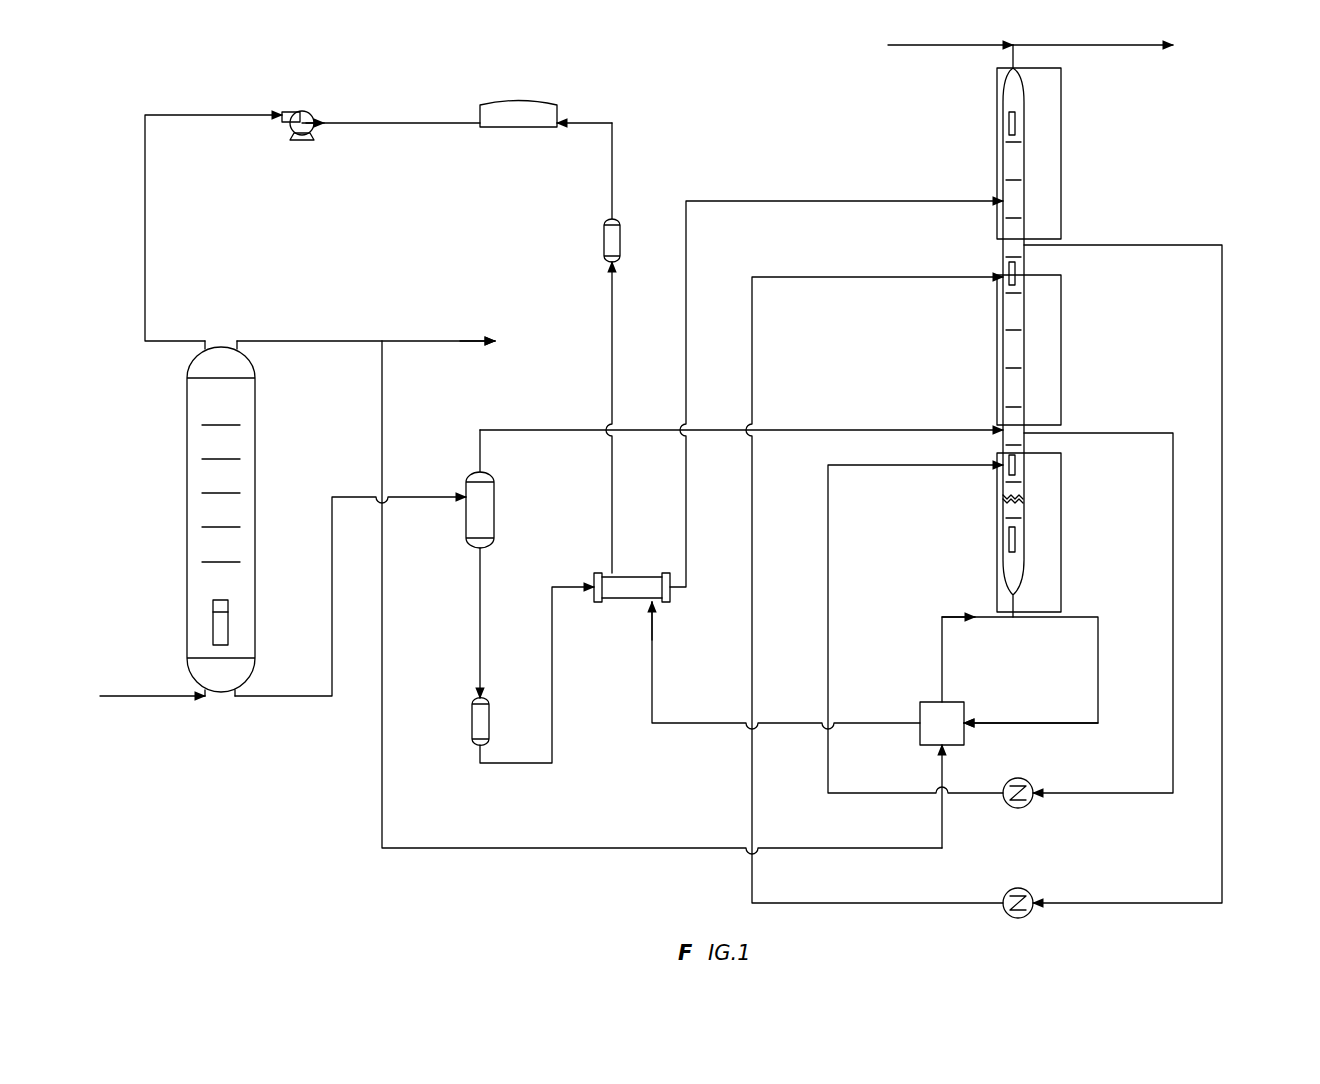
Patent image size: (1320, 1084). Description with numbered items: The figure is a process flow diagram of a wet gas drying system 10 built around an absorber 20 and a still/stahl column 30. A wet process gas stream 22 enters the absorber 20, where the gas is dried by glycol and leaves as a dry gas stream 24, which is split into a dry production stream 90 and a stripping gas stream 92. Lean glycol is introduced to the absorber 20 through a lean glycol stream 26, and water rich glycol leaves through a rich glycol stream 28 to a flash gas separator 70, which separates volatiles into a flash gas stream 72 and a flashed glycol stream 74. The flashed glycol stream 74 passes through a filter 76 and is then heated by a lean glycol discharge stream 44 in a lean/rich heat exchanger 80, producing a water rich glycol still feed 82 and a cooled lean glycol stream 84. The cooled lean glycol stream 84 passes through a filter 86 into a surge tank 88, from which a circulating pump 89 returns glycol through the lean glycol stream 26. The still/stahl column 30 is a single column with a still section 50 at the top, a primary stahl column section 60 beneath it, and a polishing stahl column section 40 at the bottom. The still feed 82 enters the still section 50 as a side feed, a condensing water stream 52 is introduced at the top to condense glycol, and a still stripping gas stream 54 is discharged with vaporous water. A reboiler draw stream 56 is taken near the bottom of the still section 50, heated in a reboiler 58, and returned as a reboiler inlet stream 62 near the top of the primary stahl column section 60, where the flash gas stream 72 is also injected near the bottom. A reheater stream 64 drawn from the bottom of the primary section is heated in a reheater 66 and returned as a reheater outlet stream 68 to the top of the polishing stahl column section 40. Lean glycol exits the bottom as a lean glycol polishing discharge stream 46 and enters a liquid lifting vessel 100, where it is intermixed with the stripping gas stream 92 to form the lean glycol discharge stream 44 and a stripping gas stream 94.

The wet gas drying system 10 is at (1242, 86).
The absorber 20 is at (155, 415).
The wet process gas stream 22 is at (123, 694).
The dry gas stream 24 is at (348, 341).
The lean glycol stream 26 is at (145, 190).
The rich glycol stream 28 is at (282, 696).
The still/stahl column 30 is at (1098, 297).
The polishing stahl column section 40 is at (1061, 545).
The lean glycol discharge stream 44 is at (885, 723).
The lean glycol polishing discharge stream 46 is at (998, 724).
The still section 50 is at (1061, 135).
The condensing water stream 52 is at (915, 46).
The still stripping gas stream 54 is at (1130, 46).
The reboiler draw stream 56 is at (1172, 245).
The reboiler 58 is at (1008, 890).
The primary stahl column section 60 is at (1061, 350).
The reboiler inlet stream 62 is at (962, 276).
The reheater stream 64 is at (1140, 433).
The reheater 66 is at (1027, 806).
The reheater outlet stream 68 is at (965, 470).
The flash gas separator 70 is at (494, 500).
The flash gas stream 72 is at (575, 430).
The flashed glycol stream 74 is at (480, 602).
The filter 76 is at (472, 716).
The lean/rich heat exchanger 80 is at (614, 572).
The water rich glycol still feed 82 is at (812, 190).
The cooled lean glycol stream 84 is at (616, 305).
The filter 86 is at (622, 218).
The surge tank 88 is at (562, 102).
The circulating pump 89 is at (307, 111).
The dry production stream 90 is at (452, 341).
The stripping gas stream 92 is at (382, 366).
The stripping gas stream 94 is at (927, 620).
The liquid lifting vessel 100 is at (957, 700).